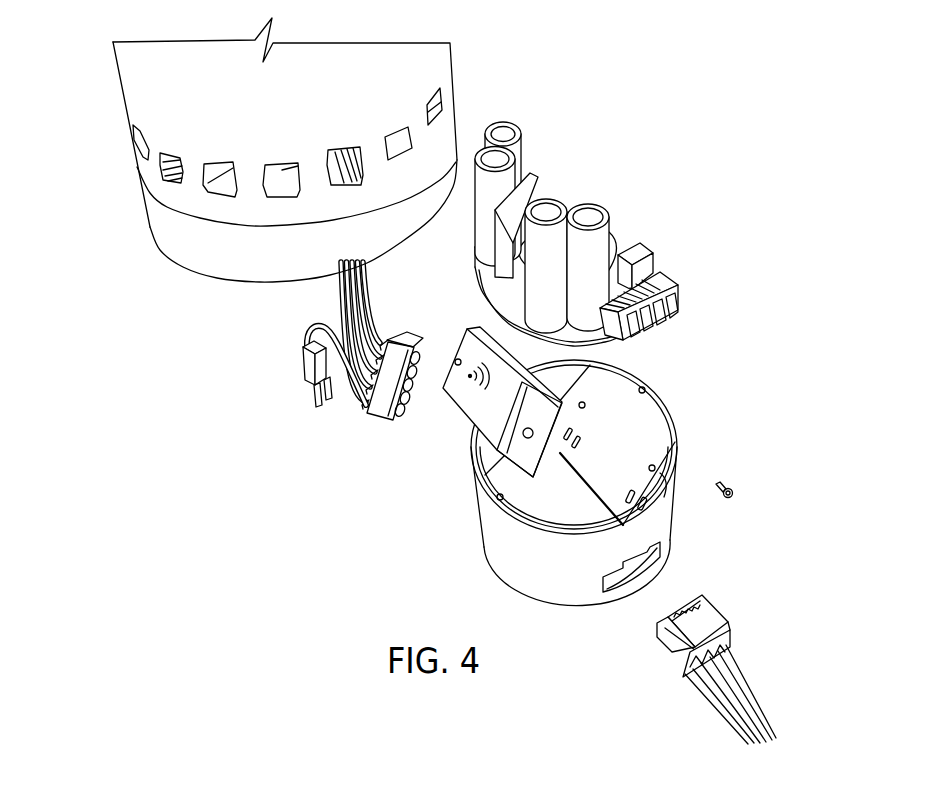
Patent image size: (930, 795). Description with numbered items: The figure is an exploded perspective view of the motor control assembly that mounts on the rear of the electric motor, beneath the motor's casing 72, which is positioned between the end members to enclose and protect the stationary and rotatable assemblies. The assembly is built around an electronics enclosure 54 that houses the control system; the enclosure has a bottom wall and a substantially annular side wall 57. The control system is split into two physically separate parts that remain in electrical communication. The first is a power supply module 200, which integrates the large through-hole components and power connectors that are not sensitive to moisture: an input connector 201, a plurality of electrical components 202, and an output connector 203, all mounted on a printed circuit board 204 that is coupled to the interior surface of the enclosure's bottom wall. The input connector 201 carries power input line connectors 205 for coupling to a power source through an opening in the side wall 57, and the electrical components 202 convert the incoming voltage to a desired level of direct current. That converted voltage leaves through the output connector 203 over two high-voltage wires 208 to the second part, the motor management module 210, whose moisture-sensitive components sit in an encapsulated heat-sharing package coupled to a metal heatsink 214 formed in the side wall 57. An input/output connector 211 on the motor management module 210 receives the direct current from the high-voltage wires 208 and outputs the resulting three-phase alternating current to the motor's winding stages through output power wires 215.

The electronics enclosure 54 is at (477, 527).
The side wall 57 is at (533, 563).
The casing 72 is at (123, 100).
The power supply module 200 is at (672, 183).
The input connector 201 is at (673, 280).
The electrical components 202 is at (546, 205).
The output connector 203 is at (310, 364).
The printed circuit board 204 is at (507, 290).
The power input line connectors 205 is at (732, 673).
The high-voltage wires 208 is at (354, 395).
The motor management module 210 is at (477, 400).
The input/output connector 211 is at (373, 417).
The metal heatsink 214 is at (636, 427).
The output power wires 215 is at (367, 283).